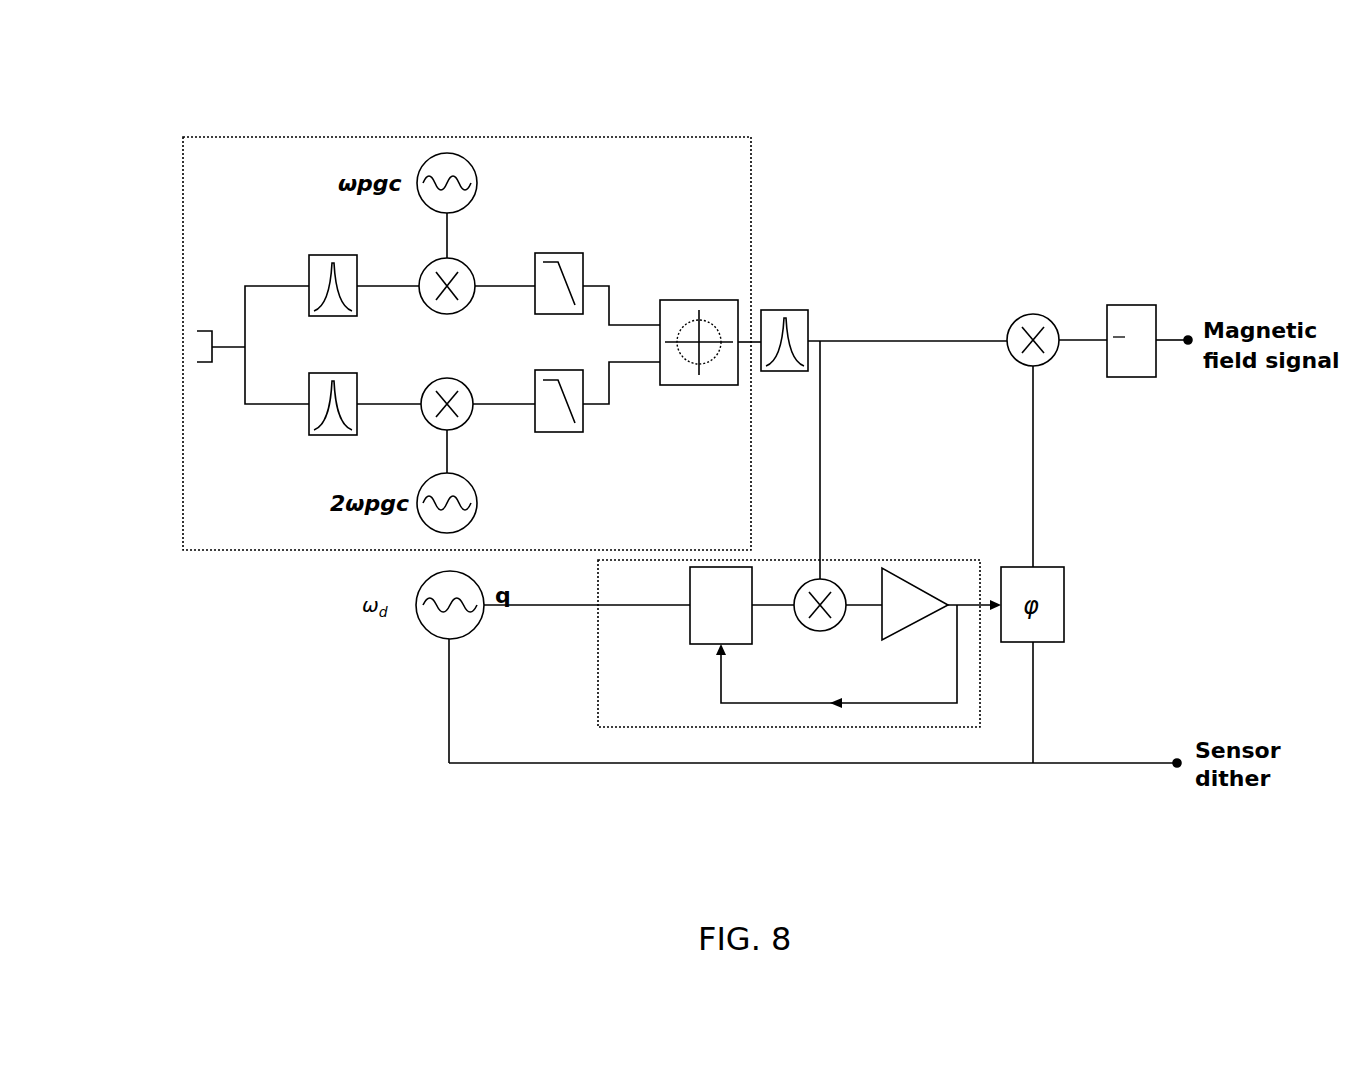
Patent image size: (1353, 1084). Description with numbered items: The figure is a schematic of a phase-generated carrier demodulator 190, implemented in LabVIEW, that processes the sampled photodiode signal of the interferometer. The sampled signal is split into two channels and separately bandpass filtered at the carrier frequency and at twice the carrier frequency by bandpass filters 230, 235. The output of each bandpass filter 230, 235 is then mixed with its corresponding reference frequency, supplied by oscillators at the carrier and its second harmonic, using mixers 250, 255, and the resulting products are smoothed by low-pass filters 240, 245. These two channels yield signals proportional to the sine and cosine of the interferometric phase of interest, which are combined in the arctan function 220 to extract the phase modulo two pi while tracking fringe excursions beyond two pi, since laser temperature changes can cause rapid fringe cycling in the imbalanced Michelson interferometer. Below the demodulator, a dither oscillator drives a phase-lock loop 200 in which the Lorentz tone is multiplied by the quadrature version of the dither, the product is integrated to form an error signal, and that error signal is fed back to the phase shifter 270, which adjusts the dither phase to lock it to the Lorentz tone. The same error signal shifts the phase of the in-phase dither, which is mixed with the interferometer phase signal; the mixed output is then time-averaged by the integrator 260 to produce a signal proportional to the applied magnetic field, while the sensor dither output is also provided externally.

The phase-generated carrier demodulator 190 is at (368, 118).
The phase-lock loop 200 is at (590, 742).
The arctan function 220 is at (723, 300).
The bandpass filter 230 is at (297, 263).
The bandpass filter 235 is at (297, 422).
The low-pass filter 240 is at (593, 259).
The low-pass filter 245 is at (594, 424).
The mixer 250 is at (490, 262).
The mixer 255 is at (467, 432).
The integrator 260 is at (1132, 296).
The phase shifter 270 is at (683, 628).